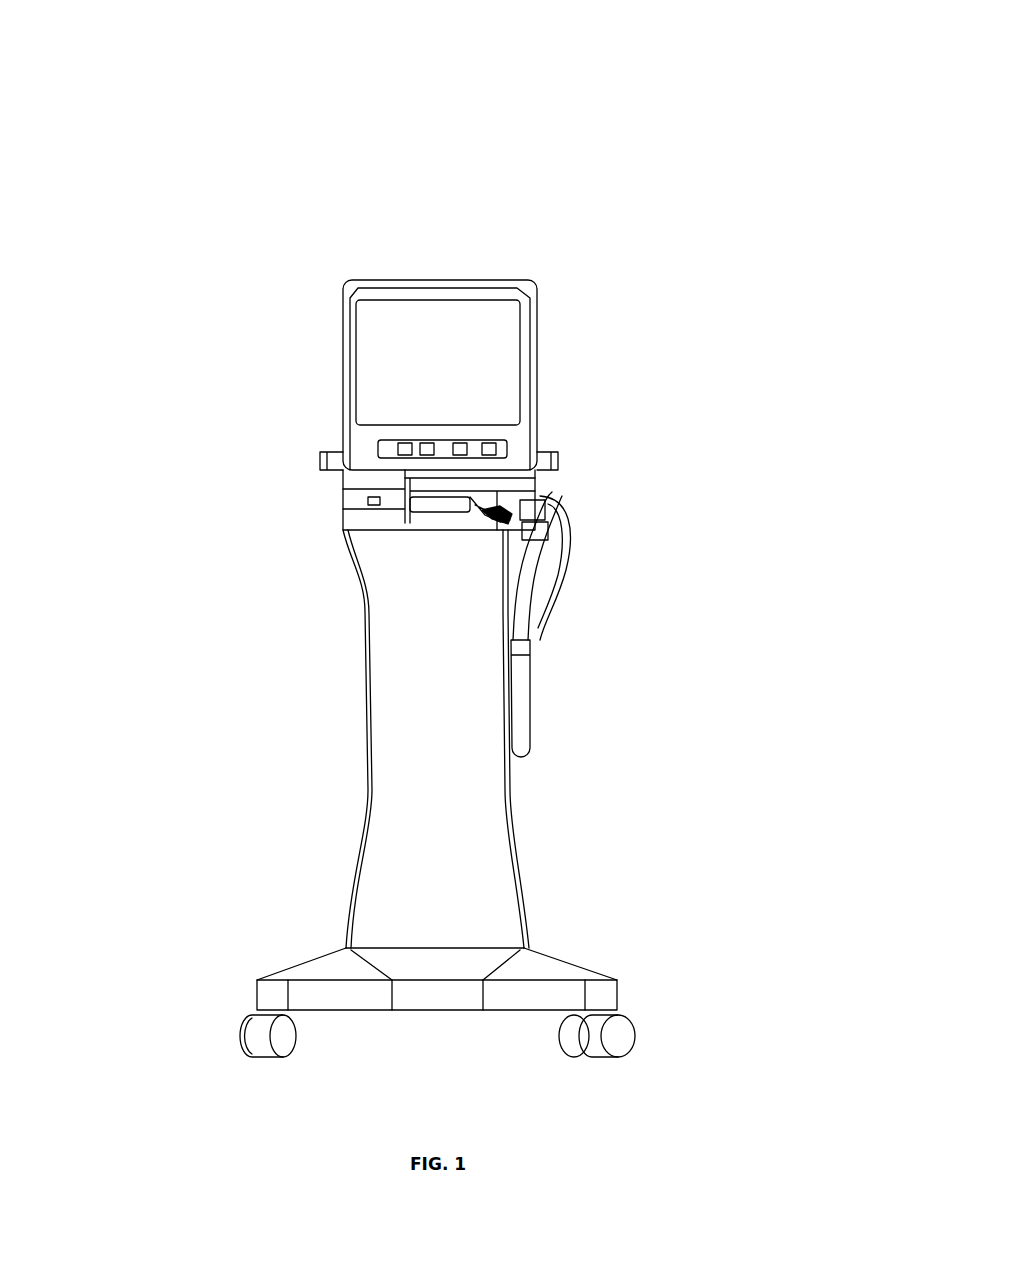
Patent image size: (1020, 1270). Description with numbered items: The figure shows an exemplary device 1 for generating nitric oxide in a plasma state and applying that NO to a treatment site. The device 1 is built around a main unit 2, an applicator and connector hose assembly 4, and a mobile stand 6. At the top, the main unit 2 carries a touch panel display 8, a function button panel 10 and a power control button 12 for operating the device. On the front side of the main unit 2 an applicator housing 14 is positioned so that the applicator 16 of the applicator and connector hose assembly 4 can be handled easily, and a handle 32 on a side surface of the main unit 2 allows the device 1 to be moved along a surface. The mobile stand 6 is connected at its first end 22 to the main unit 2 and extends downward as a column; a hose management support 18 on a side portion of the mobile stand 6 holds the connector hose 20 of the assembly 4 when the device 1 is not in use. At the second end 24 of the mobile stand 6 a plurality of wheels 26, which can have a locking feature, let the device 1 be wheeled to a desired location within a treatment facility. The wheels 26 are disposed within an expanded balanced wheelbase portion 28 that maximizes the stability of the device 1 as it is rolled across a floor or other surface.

The device 1 is at (548, 134).
The main unit 2 is at (545, 312).
The applicator and connector hose assembly 4 is at (588, 499).
The mobile stand 6 is at (350, 775).
The touch panel display 8 is at (340, 292).
The function button panel 10 is at (342, 420).
The power control button 12 is at (322, 465).
The applicator housing 14 is at (470, 507).
The applicator 16 is at (536, 490).
The hose management support 18 is at (535, 642).
The connector hose 20 is at (520, 707).
The first end 22 is at (345, 530).
The second end 24 is at (253, 1003).
The wheels 26 is at (545, 1018).
The expanded balanced wheelbase portion 28 is at (290, 968).
The handle 32 is at (558, 455).